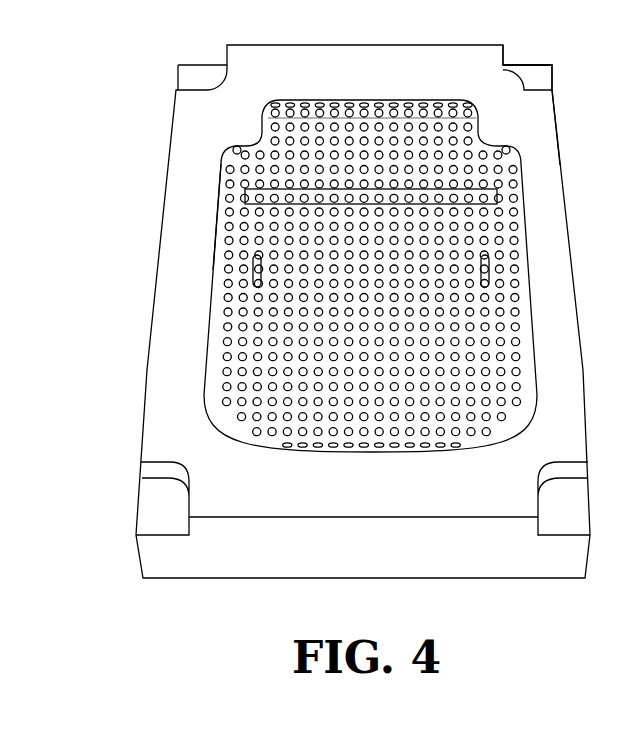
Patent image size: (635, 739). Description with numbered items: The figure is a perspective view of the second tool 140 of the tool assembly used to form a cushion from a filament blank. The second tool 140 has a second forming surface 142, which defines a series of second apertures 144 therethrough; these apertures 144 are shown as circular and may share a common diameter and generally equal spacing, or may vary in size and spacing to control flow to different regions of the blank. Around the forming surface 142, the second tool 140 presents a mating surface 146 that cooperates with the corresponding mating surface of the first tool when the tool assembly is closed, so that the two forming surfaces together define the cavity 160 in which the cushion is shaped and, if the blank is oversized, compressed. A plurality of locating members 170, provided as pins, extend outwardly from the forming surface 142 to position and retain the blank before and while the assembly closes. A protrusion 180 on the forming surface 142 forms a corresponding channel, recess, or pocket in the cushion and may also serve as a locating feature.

The second tool 140 is at (156, 63).
The second forming surface 142 is at (245, 302).
The second apertures 144 is at (262, 226).
The mating surface 146 is at (527, 123).
The cavity 160 is at (230, 260).
The locating members 170 is at (252, 272).
The protrusion 180 is at (497, 197).